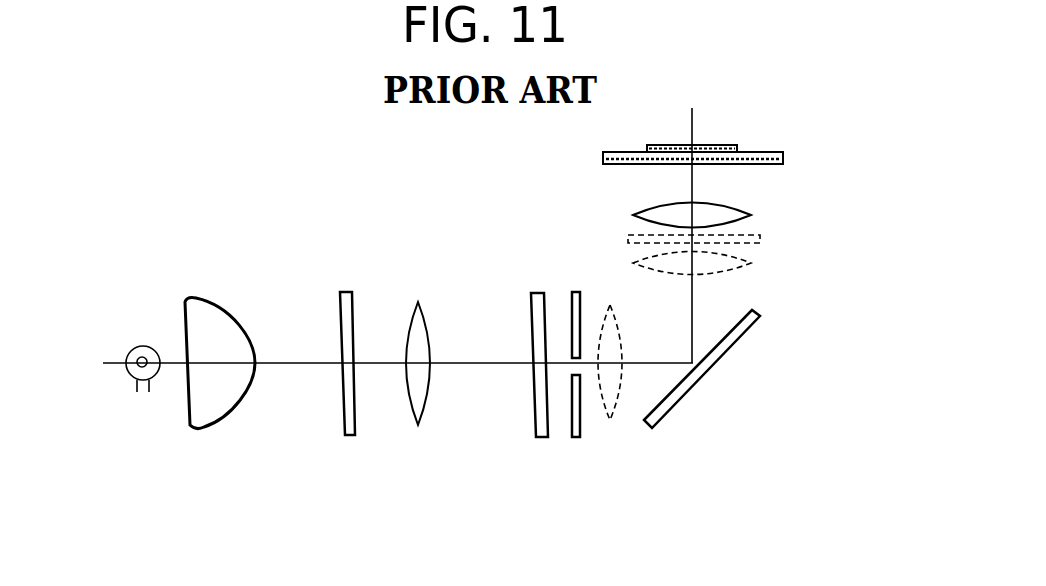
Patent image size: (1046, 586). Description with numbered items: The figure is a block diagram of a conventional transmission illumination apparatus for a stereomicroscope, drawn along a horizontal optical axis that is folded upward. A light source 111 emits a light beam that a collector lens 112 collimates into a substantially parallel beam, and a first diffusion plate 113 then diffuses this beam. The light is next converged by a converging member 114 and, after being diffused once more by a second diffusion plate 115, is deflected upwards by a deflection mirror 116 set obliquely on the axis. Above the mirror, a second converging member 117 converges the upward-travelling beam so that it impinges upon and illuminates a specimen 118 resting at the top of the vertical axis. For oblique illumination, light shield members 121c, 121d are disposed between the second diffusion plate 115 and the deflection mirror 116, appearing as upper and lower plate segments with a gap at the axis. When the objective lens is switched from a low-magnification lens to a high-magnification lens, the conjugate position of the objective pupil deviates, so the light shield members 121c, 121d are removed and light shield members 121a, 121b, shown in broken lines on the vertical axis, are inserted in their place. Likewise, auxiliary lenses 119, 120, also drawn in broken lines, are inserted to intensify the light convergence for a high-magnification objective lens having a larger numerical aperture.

The light source 111 is at (128, 378).
The collector lens 112 is at (208, 428).
The first diffusion plate 113 is at (348, 437).
The converging member 114 is at (421, 425).
The second diffusion plate 115 is at (540, 437).
The deflection mirror 116 is at (717, 365).
The second converging member 117 is at (743, 208).
The specimen 118 is at (733, 147).
The auxiliary lens 119 is at (612, 418).
The auxiliary lens 120 is at (751, 263).
The light shield member 121a is at (760, 240).
The light shield member 121b is at (628, 240).
The light shield member 121c is at (577, 292).
The light shield member 121d is at (580, 437).